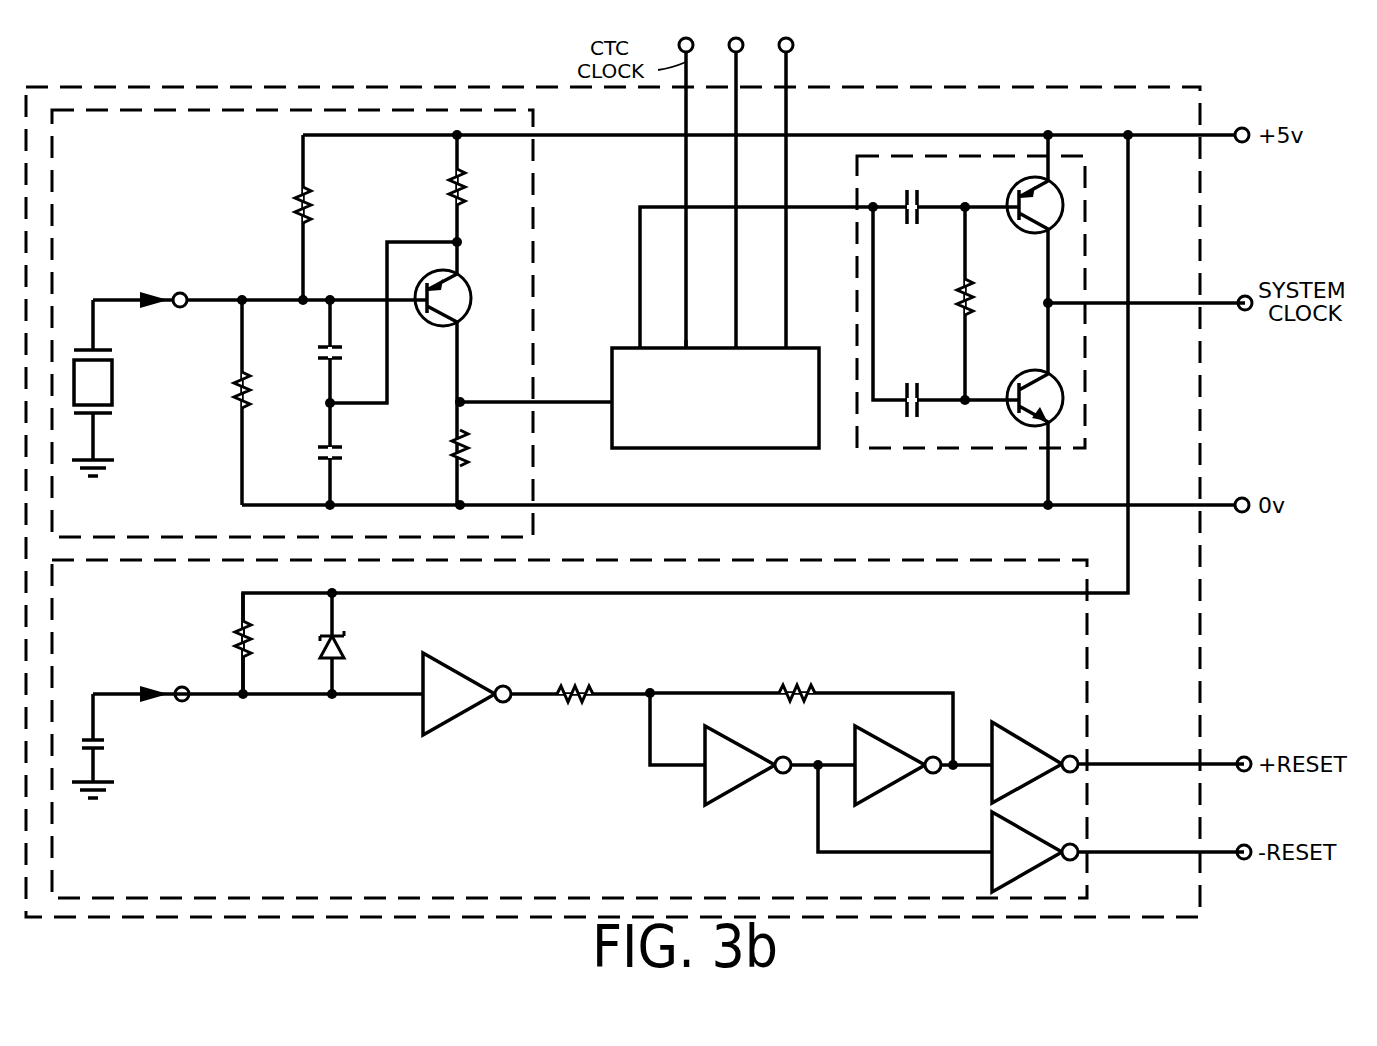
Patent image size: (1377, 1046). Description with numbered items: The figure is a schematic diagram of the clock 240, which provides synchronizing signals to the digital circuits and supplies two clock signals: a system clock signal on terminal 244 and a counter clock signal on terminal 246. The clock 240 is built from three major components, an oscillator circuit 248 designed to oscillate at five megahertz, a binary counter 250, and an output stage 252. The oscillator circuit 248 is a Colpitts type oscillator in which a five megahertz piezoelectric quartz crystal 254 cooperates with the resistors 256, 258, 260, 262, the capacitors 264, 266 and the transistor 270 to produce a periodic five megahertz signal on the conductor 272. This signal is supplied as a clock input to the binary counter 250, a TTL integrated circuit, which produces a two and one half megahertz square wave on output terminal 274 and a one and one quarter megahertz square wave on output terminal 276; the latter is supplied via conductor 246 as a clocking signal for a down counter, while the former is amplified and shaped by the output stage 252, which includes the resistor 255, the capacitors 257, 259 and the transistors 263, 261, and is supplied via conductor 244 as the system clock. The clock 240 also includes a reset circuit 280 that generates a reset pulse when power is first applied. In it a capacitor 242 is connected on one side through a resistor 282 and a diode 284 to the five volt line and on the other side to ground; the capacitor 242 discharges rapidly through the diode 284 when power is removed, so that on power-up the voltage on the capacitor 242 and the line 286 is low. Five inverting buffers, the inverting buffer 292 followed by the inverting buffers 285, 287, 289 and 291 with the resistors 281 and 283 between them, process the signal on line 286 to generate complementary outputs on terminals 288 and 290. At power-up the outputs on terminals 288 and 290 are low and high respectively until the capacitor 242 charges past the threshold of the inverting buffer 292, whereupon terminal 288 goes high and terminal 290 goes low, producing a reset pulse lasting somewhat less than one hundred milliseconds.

The clock 240 is at (1200, 710).
The capacitor 242 is at (104, 745).
The system clock terminal 244 is at (1160, 303).
The counter clock terminal 246 is at (686, 110).
The oscillator circuit 248 is at (533, 225).
The binary counter 250 is at (760, 450).
The output stage 252 is at (985, 448).
The quartz crystal 254 is at (112, 375).
The resistor 255 is at (960, 297).
The resistor 256 is at (246, 390).
The capacitor 257 is at (905, 220).
The resistor 258 is at (300, 203).
The capacitor 259 is at (907, 395).
The resistor 260 is at (453, 182).
The transistor 261 is at (1012, 385).
The resistor 262 is at (455, 455).
The transistor 263 is at (1030, 232).
The capacitor 264 is at (318, 350).
The capacitor 266 is at (320, 455).
The transistor 270 is at (470, 305).
The conductor 272 is at (567, 405).
The output terminal 274 is at (640, 345).
The output terminal 276 is at (688, 345).
The reset circuit 280 is at (1087, 665).
The resistor 281 is at (575, 692).
The resistor 282 is at (240, 640).
The resistor 283 is at (797, 690).
The diode 284 is at (344, 642).
The inverting buffer 285 is at (738, 788).
The line 286 is at (370, 697).
The inverting buffer 287 is at (897, 780).
The terminal 288 is at (1142, 762).
The inverting buffer 289 is at (1015, 790).
The terminal 290 is at (1108, 850).
The inverting buffer 291 is at (1015, 870).
The inverting buffer 292 is at (450, 665).